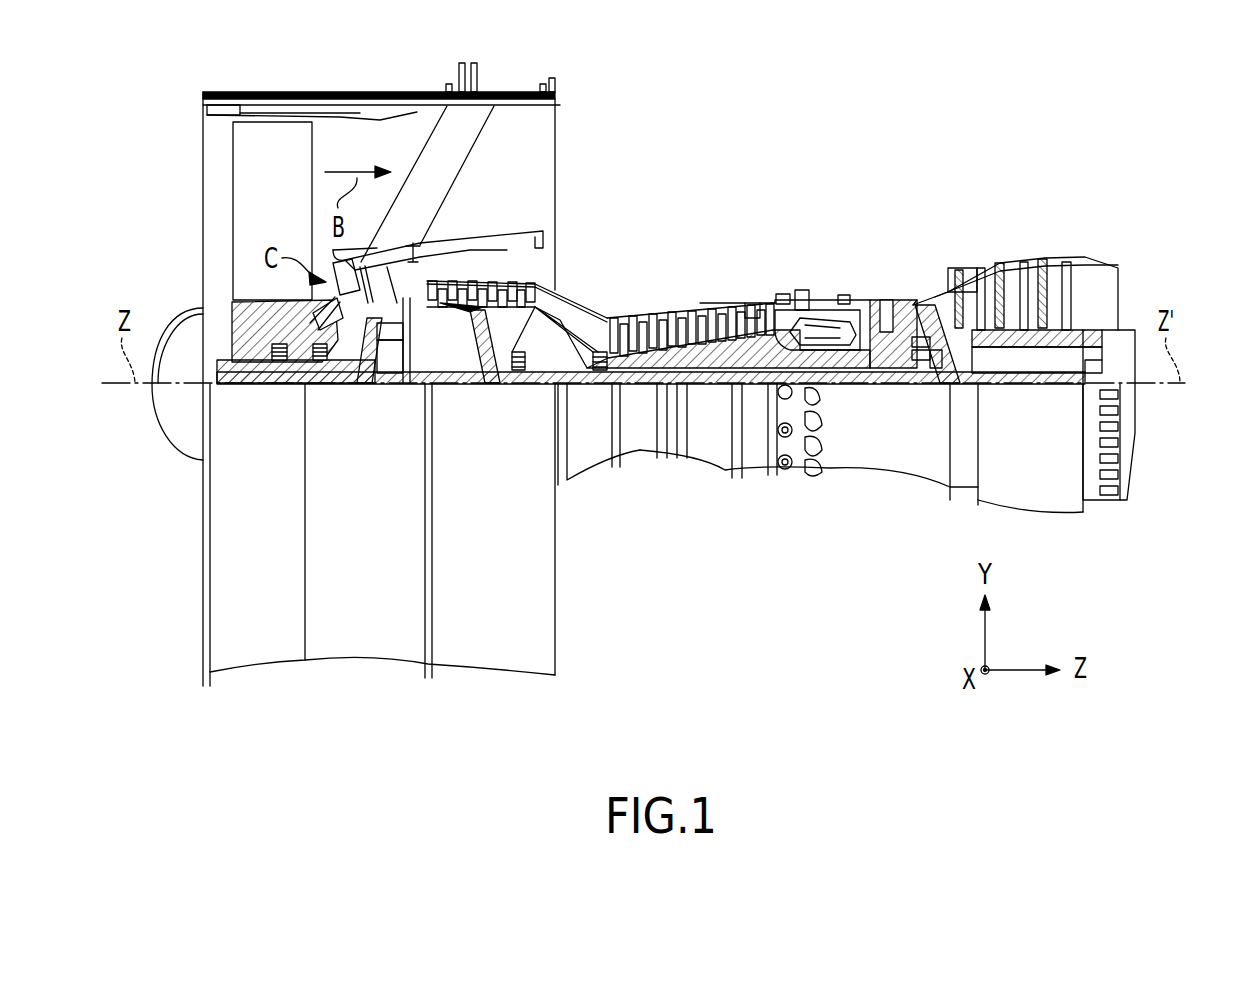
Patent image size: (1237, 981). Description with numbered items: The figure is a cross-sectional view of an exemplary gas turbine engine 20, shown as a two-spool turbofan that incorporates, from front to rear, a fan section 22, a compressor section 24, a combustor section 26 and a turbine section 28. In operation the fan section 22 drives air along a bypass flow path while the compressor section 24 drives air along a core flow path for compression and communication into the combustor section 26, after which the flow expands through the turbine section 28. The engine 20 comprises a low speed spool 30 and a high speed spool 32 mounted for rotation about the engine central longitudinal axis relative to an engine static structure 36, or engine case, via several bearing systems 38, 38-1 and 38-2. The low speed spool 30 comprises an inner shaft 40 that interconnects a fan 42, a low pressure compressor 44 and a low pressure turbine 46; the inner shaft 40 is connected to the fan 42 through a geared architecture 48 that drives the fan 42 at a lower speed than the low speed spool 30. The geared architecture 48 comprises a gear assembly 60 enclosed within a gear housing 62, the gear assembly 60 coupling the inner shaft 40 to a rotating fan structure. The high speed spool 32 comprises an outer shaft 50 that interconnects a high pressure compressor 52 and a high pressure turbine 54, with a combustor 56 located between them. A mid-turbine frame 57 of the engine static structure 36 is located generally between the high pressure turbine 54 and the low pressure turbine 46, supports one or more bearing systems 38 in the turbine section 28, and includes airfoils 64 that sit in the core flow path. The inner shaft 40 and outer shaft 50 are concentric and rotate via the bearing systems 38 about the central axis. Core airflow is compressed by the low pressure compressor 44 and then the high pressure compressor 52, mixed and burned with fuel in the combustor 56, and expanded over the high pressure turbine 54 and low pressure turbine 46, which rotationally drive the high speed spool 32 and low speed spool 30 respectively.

The gas turbine engine 20 is at (870, 98).
The fan section 22 is at (400, 83).
The compressor section 24 is at (775, 197).
The combustor section 26 is at (865, 197).
The turbine section 28 is at (1068, 197).
The low speed spool 30 is at (715, 385).
The high speed spool 32 is at (757, 343).
The engine static structure 36 is at (753, 450).
The bearing system 38 is at (937, 347).
The bearing system 38-1 is at (283, 362).
The bearing system 38-2 is at (515, 372).
The inner shaft 40 is at (580, 385).
The fan 42 is at (272, 224).
The low pressure compressor 44 is at (497, 285).
The low pressure turbine 46 is at (1017, 270).
The geared architecture 48 is at (385, 400).
The outer shaft 50 is at (820, 375).
The high pressure compressor 52 is at (712, 340).
The high pressure turbine 54 is at (893, 300).
The combustor 56 is at (827, 320).
The mid-turbine frame 57 is at (930, 340).
The gear assembly 60 is at (403, 350).
The gear housing 62 is at (403, 330).
The airfoils 64 is at (932, 315).